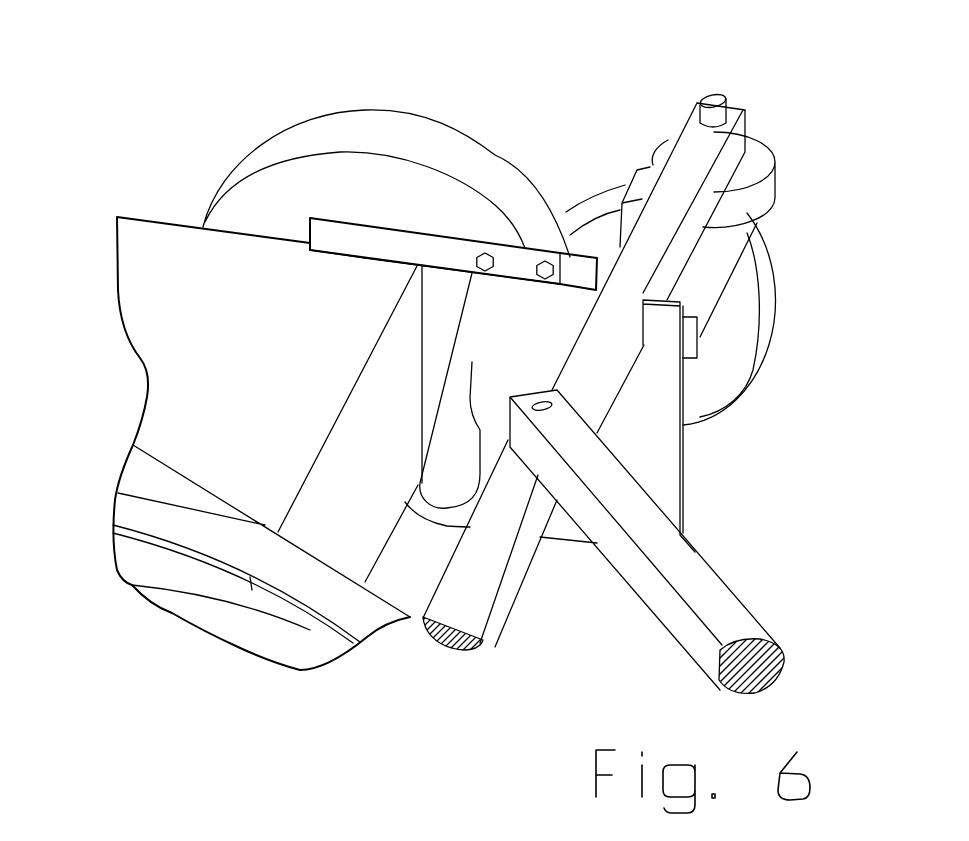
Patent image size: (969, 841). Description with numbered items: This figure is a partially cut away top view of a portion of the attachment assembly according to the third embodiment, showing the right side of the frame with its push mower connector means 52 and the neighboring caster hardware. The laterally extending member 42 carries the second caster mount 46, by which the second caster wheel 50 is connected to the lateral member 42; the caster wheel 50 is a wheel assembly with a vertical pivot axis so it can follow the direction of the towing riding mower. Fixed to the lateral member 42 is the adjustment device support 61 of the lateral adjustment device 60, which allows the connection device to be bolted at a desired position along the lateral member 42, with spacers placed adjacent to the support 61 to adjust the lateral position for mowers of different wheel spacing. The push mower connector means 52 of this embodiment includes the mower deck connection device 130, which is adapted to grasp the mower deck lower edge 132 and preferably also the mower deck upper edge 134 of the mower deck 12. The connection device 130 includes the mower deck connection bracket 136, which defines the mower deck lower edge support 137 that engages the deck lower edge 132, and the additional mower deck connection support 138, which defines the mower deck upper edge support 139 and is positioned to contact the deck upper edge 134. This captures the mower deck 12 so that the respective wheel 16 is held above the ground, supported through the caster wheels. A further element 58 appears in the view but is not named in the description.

The mower deck 12 is at (177, 243).
The wheel 16 is at (393, 135).
The laterally extending member 42 is at (483, 547).
The second caster mount 46 is at (713, 100).
The second caster wheel 50 is at (737, 367).
The push mower connector means 52 is at (600, 240).
The square bar 58 is at (720, 607).
The lateral adjustment device 60 is at (697, 375).
The adjustment device support 61 is at (687, 347).
The mower deck connection device 130 is at (477, 317).
The mower deck lower edge 132 is at (382, 530).
The mower deck upper edge 134 is at (307, 465).
The mower deck connection bracket 136 is at (657, 482).
The mower deck lower edge support 137 is at (472, 362).
The additional mower deck connection support 138 is at (327, 240).
The mower deck upper edge support 139 is at (362, 258).